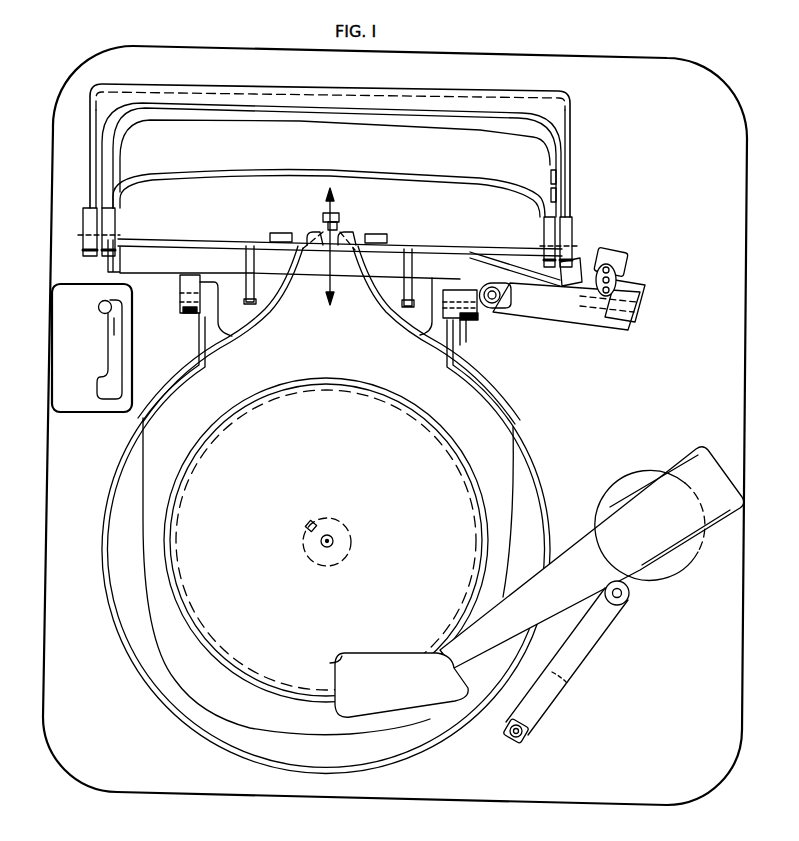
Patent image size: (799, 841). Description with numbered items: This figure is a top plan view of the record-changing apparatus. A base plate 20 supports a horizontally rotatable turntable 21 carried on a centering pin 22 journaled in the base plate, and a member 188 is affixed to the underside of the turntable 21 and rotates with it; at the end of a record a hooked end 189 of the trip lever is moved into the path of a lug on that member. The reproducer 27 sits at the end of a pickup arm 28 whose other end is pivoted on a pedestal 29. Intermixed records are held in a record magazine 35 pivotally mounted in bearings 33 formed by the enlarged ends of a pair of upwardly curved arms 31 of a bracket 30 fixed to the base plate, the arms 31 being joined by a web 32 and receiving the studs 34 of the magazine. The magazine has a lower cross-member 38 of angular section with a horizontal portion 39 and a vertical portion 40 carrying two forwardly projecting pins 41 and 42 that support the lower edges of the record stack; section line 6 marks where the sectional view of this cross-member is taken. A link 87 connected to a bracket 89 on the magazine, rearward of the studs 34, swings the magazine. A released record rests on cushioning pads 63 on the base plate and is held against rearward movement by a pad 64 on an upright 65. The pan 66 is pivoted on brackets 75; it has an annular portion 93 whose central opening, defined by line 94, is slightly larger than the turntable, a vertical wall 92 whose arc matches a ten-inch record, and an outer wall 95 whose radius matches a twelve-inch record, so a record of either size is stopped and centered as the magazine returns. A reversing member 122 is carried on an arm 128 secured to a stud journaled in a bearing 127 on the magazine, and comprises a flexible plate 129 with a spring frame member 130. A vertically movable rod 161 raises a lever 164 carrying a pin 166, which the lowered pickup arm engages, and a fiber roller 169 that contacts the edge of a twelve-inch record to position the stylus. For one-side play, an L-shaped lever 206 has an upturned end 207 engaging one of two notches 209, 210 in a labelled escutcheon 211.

The section line 6- 6 is at (336, 248).
The base plate 20 is at (440, 796).
The turntable 21 is at (205, 632).
The centering pin 22 is at (332, 545).
The reproducer 27 is at (387, 663).
The pickup arm 28 is at (583, 540).
The pedestal 29 is at (627, 478).
The bracket 30 is at (570, 126).
The arms 31 is at (90, 163).
The web 32 is at (452, 107).
The bearings 33 is at (90, 212).
The studs 34 is at (85, 235).
The record magazine 35 is at (232, 130).
The lower cross-member 38 is at (187, 243).
The horizontal portion 39 is at (177, 262).
The vertical portion 40 is at (205, 246).
The pin 41 is at (262, 324).
The pin 42 is at (394, 322).
The cushioning pads 63 is at (285, 232).
The pad 64 is at (320, 213).
The upright 65 is at (340, 216).
The pan 66 is at (190, 707).
The bracket 75 is at (187, 313).
The link 87 is at (562, 162).
The bracket 89 is at (565, 172).
The vertical wall 92 is at (273, 720).
The annular portion 93 is at (223, 677).
The line 94 is at (187, 600).
The wall 95 is at (236, 746).
The reversing member 122 is at (617, 279).
The bearing 127 is at (490, 310).
The arm 128 is at (588, 320).
The flexible plate 129 is at (626, 260).
The spring frame member 130 is at (644, 303).
The rod 161 is at (630, 600).
The lever 164 is at (587, 648).
The pin 166 is at (528, 736).
The fiber roller 169 is at (504, 732).
The member 188 is at (333, 520).
The hooked end 189 is at (308, 522).
The L-shaped lever 206 is at (120, 345).
The upturned end 207 is at (112, 308).
The notch 209 is at (105, 300).
The notch 210 is at (95, 402).
The escutcheon 211 is at (62, 346).